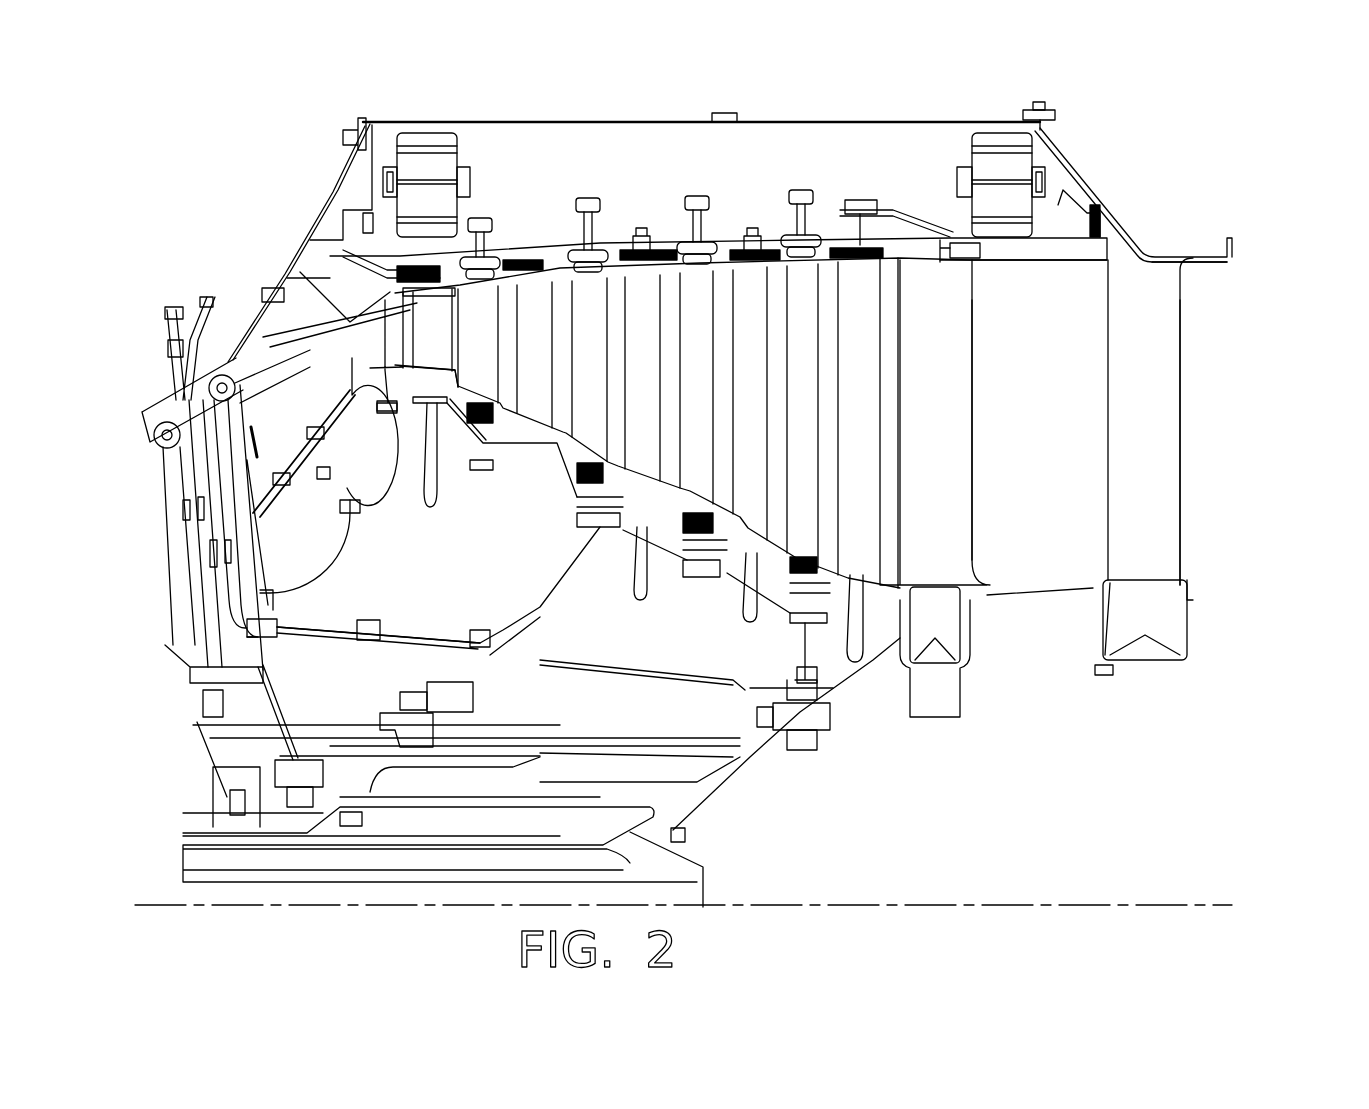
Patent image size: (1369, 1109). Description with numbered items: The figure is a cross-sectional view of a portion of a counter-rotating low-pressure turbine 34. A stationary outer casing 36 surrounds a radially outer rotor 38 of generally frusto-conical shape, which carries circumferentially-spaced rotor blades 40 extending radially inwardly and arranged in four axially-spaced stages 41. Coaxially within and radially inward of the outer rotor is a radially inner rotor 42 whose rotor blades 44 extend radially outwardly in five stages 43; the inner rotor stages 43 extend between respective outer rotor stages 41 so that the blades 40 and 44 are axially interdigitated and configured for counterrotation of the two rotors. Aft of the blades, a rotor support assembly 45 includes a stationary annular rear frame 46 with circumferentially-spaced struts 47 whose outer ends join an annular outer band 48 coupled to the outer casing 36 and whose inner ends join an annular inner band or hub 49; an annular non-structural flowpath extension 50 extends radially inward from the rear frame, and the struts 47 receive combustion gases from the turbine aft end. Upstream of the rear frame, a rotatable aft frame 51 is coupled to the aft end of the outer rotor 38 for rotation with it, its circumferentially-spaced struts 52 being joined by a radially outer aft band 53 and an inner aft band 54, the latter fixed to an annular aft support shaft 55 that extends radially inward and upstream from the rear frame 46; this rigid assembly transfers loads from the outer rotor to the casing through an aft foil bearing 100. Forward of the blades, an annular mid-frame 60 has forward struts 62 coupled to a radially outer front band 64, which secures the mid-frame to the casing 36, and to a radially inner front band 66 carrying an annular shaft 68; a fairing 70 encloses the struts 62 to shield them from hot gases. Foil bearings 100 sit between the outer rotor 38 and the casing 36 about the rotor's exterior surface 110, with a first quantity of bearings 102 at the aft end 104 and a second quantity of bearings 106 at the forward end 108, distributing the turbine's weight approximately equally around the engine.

The counter-rotating low-pressure turbine 34 is at (668, 115).
The stationary outer casing 36 is at (785, 120).
The radially outer rotor 38 is at (668, 235).
The rotor blades 40 is at (464, 324).
The blade rows or stages 41 is at (482, 212).
The radially inner rotor 42 is at (490, 472).
The rows or stages 43 is at (437, 502).
The rotor blades 44 is at (417, 361).
The rotor support assembly 45 is at (1207, 345).
The stationary annular rear frame 46 is at (1182, 458).
The struts 47 is at (1125, 409).
The annular outer band 48 is at (1215, 260).
The annular inner band or hub 49 is at (1172, 580).
The annular non-structural flowpath extension 50 is at (1023, 595).
The rotatable aft frame 51 is at (974, 455).
The struts 52 is at (917, 434).
The radially outer annular aft band 53 is at (988, 257).
The inner aft band 54 is at (918, 585).
The annular aft support shaft 55 is at (752, 758).
The annular mid-frame 60 is at (265, 532).
The forward struts 62 is at (193, 573).
The radially outer front band 64 is at (152, 408).
The radially inner front band 66 is at (240, 708).
The annular shaft 68 is at (240, 797).
The fairing 70 is at (165, 522).
The foil bearings 100 is at (455, 148).
The first quantity of bearings 102 is at (960, 180).
The aft end 104 is at (1070, 143).
The second quantity of bearings 106 is at (470, 172).
The forward end 108 is at (333, 158).
The exterior surface 110 is at (720, 237).